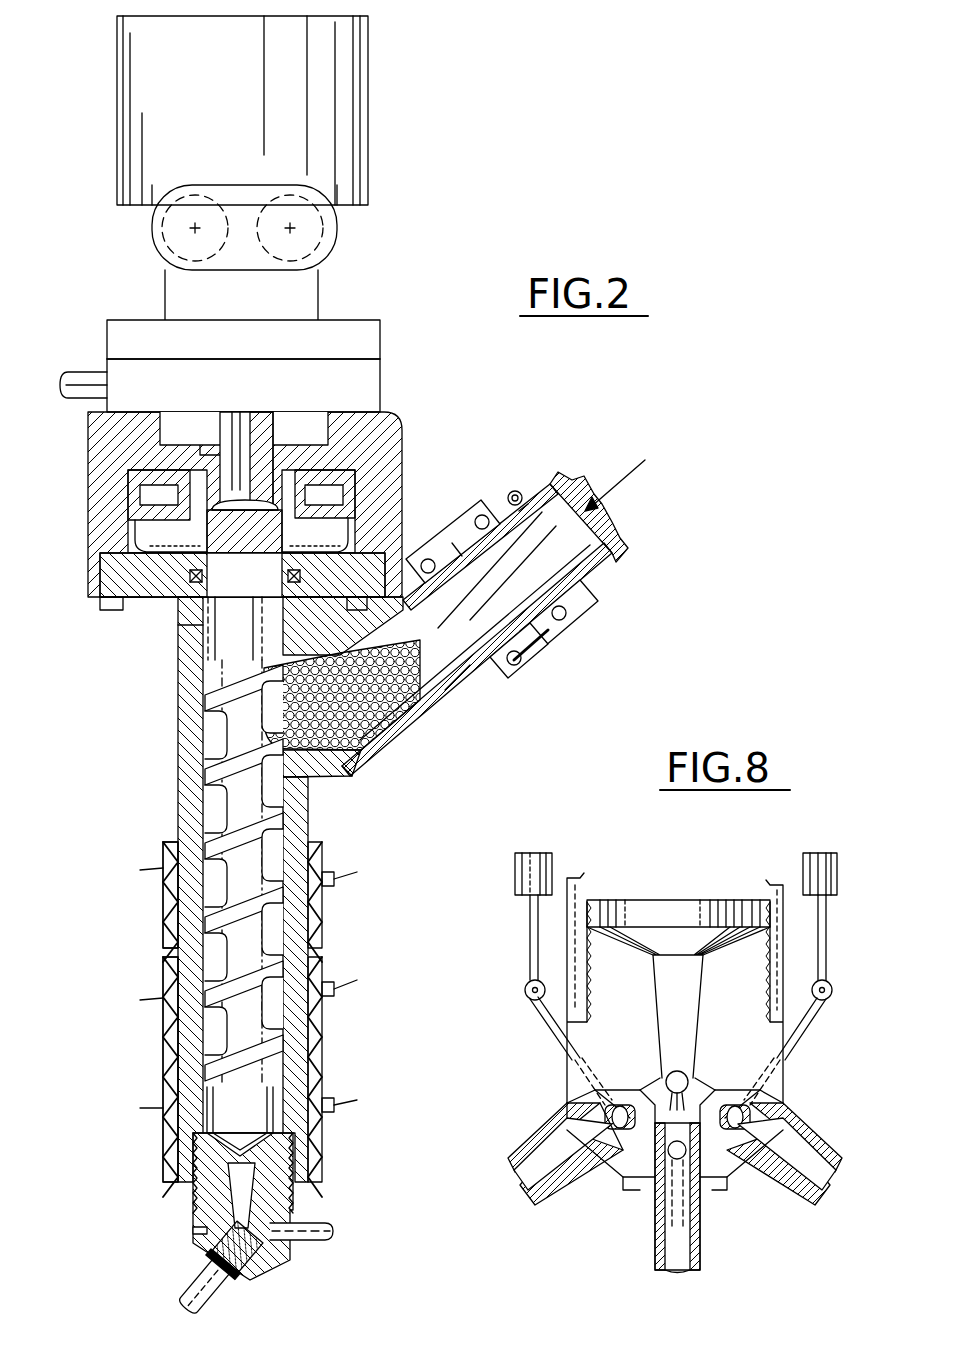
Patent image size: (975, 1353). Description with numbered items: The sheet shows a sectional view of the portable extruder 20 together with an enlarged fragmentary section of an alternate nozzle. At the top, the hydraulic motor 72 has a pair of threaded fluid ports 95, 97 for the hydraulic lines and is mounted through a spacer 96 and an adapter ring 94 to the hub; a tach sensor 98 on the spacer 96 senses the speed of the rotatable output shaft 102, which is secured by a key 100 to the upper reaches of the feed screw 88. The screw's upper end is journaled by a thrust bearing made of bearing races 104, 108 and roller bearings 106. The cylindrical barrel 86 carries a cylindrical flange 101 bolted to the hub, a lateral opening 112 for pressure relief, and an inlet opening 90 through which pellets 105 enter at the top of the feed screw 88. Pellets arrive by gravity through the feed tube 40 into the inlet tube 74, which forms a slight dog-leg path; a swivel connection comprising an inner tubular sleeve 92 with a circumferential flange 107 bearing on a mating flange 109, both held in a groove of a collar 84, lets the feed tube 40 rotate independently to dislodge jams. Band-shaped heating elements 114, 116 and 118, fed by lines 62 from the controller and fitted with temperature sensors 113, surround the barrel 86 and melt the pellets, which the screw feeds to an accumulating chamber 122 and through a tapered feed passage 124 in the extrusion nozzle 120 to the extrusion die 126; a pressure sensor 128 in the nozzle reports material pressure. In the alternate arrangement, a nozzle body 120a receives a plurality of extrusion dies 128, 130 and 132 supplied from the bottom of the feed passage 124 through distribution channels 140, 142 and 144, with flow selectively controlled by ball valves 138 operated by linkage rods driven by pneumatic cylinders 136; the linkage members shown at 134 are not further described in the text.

In FIG. 2, the extruder 20 is at (126, 735).
In FIG. 2, the feed tube 40 is at (538, 482).
In FIG. 2, the lines 62 is at (143, 868).
In FIG. 2, the hydraulic motor 72 is at (357, 78).
In FIG. 2, the inlet tube 74 is at (465, 688).
In FIG. 2, the collar 84 is at (552, 628).
In FIG. 2, the cylindrical barrel 86 is at (180, 770).
In FIG. 2, the feed screw 88 is at (248, 866).
In FIG. 2, the inlet opening 90 is at (250, 719).
In FIG. 2, the inner tubular sleeve 92 is at (405, 710).
In FIG. 2, the adapter ring 94 is at (316, 420).
In FIG. 2, the threaded fluid port 95 is at (170, 230).
In FIG. 2, the spacer 96 is at (341, 350).
In FIG. 2, the threaded fluid port 97 is at (316, 230).
In FIG. 2, the tach sensor 98 is at (84, 370).
In FIG. 2, the key 100 is at (335, 428).
In FIG. 2, the cylindrical flange 101 is at (110, 575).
In FIG. 2, the output shaft 102 is at (232, 430).
In FIG. 2, the bearing race 104 is at (270, 468).
In FIG. 2, the pellets 105 is at (385, 742).
In FIG. 2, the roller bearings 106 is at (140, 478).
In FIG. 2, the circumferential flange 107 is at (565, 630).
In FIG. 2, the bearing race 108 is at (140, 520).
In FIG. 2, the mating flange 109 is at (522, 652).
In FIG. 2, the lateral opening 112 is at (180, 628).
In FIG. 2, the temperature sensors 113 is at (336, 872).
In FIG. 2, the heating band 114 is at (166, 884).
In FIG. 2, the heating band 116 is at (163, 972).
In FIG. 2, the lower heating band 118 is at (197, 1173).
In FIG. 2, the extrusion nozzle 120 is at (294, 1207).
In FIG. 8, the nozzle body 120a is at (760, 925).
In FIG. 2, the accumulating chamber 122 is at (275, 1148).
In FIG. 2, the tapered feed passage 124 is at (237, 1188).
In FIG. 8, the tapered feed passage 124 is at (660, 985).
In FIG. 2, the extrusion die 126 is at (197, 1298).
In FIG. 2, the pressure sensor 128 is at (336, 1232).
In FIG. 8, the pressure sensor 128 is at (545, 1148).
In FIG. 8, the extrusion die 130 is at (700, 1240).
In FIG. 8, the extrusion die 132 is at (790, 1152).
In FIG. 8, the actuating arm 134 is at (550, 1022).
In FIG. 8, the pneumatic cylinders 136 is at (515, 872).
In FIG. 8, the ball valves 138 is at (756, 1115).
In FIG. 8, the distribution channel 140 is at (630, 1090).
In FIG. 8, the distribution channel 142 is at (690, 1050).
In FIG. 8, the distribution channel 144 is at (700, 1095).